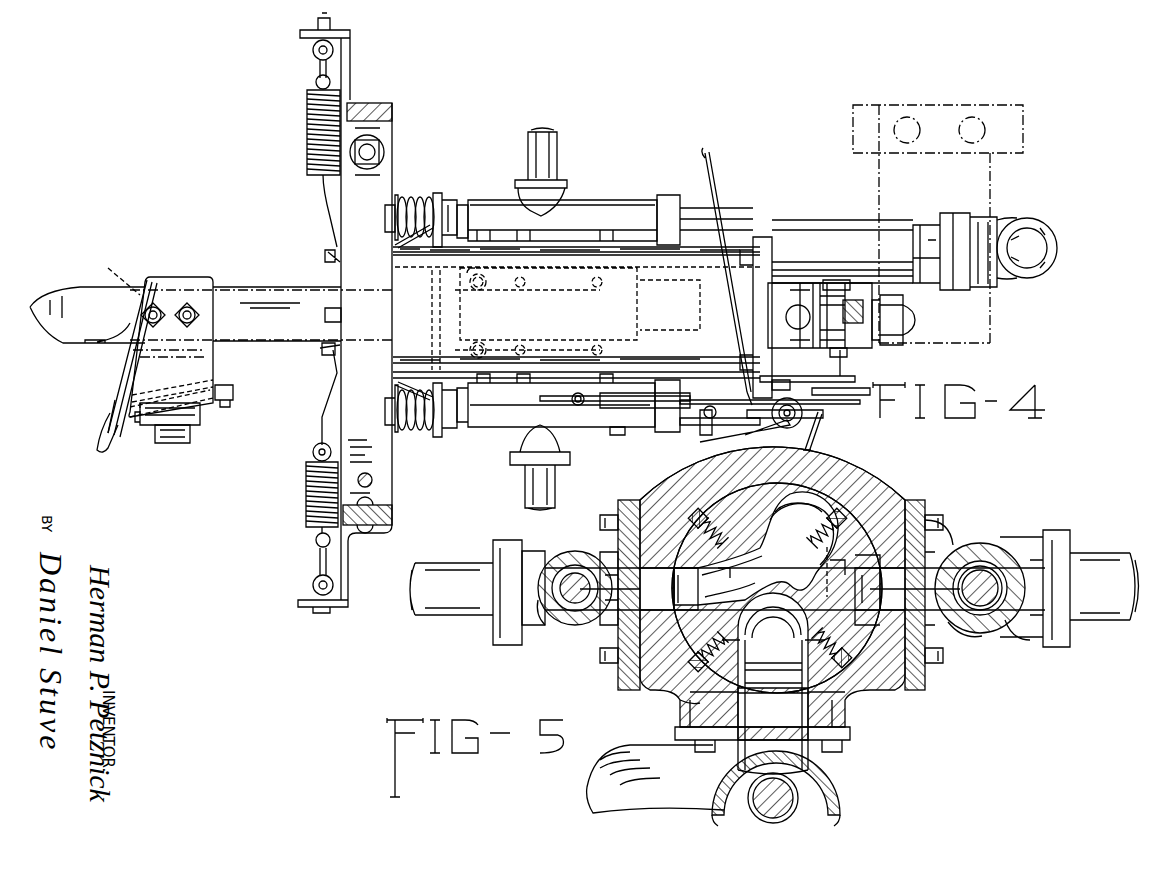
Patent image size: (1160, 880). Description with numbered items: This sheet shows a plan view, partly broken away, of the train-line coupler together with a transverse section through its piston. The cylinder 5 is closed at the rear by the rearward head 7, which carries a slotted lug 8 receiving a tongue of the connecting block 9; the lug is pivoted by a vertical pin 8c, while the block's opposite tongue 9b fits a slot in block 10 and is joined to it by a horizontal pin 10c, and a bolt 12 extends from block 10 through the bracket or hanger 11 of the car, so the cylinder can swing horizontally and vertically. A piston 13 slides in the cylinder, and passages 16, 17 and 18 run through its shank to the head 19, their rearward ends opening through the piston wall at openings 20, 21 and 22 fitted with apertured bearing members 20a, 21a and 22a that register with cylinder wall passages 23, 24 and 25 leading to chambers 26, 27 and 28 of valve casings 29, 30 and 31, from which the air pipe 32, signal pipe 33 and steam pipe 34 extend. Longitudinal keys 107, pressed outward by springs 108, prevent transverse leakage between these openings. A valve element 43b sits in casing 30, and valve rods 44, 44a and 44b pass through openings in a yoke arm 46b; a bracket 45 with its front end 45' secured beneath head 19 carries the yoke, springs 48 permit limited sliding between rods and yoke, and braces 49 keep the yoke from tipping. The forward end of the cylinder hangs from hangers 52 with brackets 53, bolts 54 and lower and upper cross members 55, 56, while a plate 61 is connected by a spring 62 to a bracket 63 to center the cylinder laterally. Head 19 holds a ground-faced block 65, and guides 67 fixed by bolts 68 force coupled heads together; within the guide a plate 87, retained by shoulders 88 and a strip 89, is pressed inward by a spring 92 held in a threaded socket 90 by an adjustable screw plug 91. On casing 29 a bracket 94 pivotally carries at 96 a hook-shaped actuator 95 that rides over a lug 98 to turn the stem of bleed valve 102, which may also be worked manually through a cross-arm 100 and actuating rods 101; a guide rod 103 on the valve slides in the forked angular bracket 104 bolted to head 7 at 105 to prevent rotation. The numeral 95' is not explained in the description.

In FIG. 4, the cylinder 5 is at (576, 312).
In FIG. 5, the cylinder 5 is at (810, 490).
In FIG. 4, the rearward head 7 is at (762, 237).
In FIG. 4, the lug or boss 8 is at (800, 284).
In FIG. 4, the vertical pin 8c is at (792, 311).
In FIG. 4, the connecting block 9 is at (823, 285).
In FIG. 4, the tongue 9b is at (848, 300).
In FIG. 4, the block 10 is at (885, 290).
In FIG. 4, the horizontal pin 10c is at (840, 357).
In FIG. 4, the bracket or hanger 11 is at (880, 185).
In FIG. 4, the bolt 12 is at (905, 318).
In FIG. 5, the piston 13 is at (850, 680).
In FIG. 5, the passage 16 is at (792, 514).
In FIG. 5, the passage 17 is at (744, 578).
In FIG. 5, the passage 18 is at (773, 690).
In FIG. 4, the head 19 is at (87, 315).
In FIG. 5, the opening 20 is at (777, 588).
In FIG. 5, the apertured bearing member 20a is at (895, 520).
In FIG. 5, the opening 21 is at (688, 589).
In FIG. 5, the apertured bearing member 21a is at (628, 560).
In FIG. 5, the opening 22 is at (740, 680).
In FIG. 5, the apertured bearing member 22a is at (690, 705).
In FIG. 5, the cylinder wall passage 23 is at (881, 590).
In FIG. 5, the cylinder wall passage 24 is at (795, 589).
In FIG. 5, the cylinder wall passage 25 is at (767, 707).
In FIG. 5, the chamber 26 is at (975, 555).
In FIG. 5, the chamber 27 is at (575, 551).
In FIG. 5, the chamber 28 is at (783, 770).
In FIG. 4, the valve casing 29 is at (556, 400).
In FIG. 5, the valve casing 29 is at (978, 635).
In FIG. 4, the valve casing 30 is at (562, 220).
In FIG. 5, the valve casing 30 is at (545, 625).
In FIG. 5, the valve casing 31 is at (840, 805).
In FIG. 4, the air pipe 32 is at (530, 484).
In FIG. 5, the air pipe 32 is at (1090, 553).
In FIG. 4, the signal pipe 33 is at (558, 170).
In FIG. 5, the signal pipe 33 is at (505, 560).
In FIG. 5, the steam pipe 34 is at (655, 779).
In FIG. 4, the valve element 43b is at (668, 200).
In FIG. 4, the valve rod 44 is at (519, 316).
In FIG. 5, the valve rod 44 is at (800, 795).
In FIG. 4, the valve rod 44a is at (450, 432).
In FIG. 5, the valve rod 44a is at (988, 580).
In FIG. 4, the valve rod 44b is at (460, 215).
In FIG. 5, the valve rod 44b is at (575, 605).
In FIG. 4, the bracket 45 is at (262, 287).
In FIG. 4, the front end of bracket 45' is at (119, 269).
In FIG. 4, the yoke arm 46b is at (448, 205).
In FIG. 4, the spring 48 is at (415, 200).
In FIG. 4, the brace 49 is at (330, 352).
In FIG. 4, the hanger 52 is at (392, 520).
In FIG. 4, the bracket 53 is at (392, 505).
In FIG. 4, the bolt 54 is at (373, 480).
In FIG. 4, the lower cross member 55 is at (395, 460).
In FIG. 4, the upper cross member 56 is at (398, 175).
In FIG. 4, the plate 61 is at (325, 418).
In FIG. 4, the spring 62 is at (306, 505).
In FIG. 4, the bracket 63 is at (348, 588).
In FIG. 4, the block 65 is at (122, 335).
In FIG. 4, the guide 67 is at (120, 372).
In FIG. 4, the bolt 68 is at (187, 307).
In FIG. 4, the plate 87 is at (108, 415).
In FIG. 4, the shoulder 88 is at (95, 445).
In FIG. 4, the strip 89 is at (232, 402).
In FIG. 4, the socket 90 is at (162, 440).
In FIG. 4, the screw plug 91 is at (578, 393).
In FIG. 4, the spring 92 is at (185, 378).
In FIG. 4, the bracket 94 is at (600, 427).
In FIG. 4, the hook-shaped actuator 95 is at (770, 396).
In FIG. 4, the rod 95' is at (697, 431).
In FIG. 4, the pivot 96 is at (615, 437).
In FIG. 4, the arm or lug 98 is at (803, 413).
In FIG. 4, the cross-arm 100 is at (829, 432).
In FIG. 4, the actuating rod 101 is at (700, 440).
In FIG. 4, the bleed valve 102 is at (765, 428).
In FIG. 4, the guide rod 103 is at (860, 380).
In FIG. 4, the angular bracket 104 is at (835, 380).
In FIG. 4, the bolt connection 105 is at (785, 380).
In FIG. 5, the longitudinal key 107 is at (900, 660).
In FIG. 5, the spring 108 is at (763, 650).